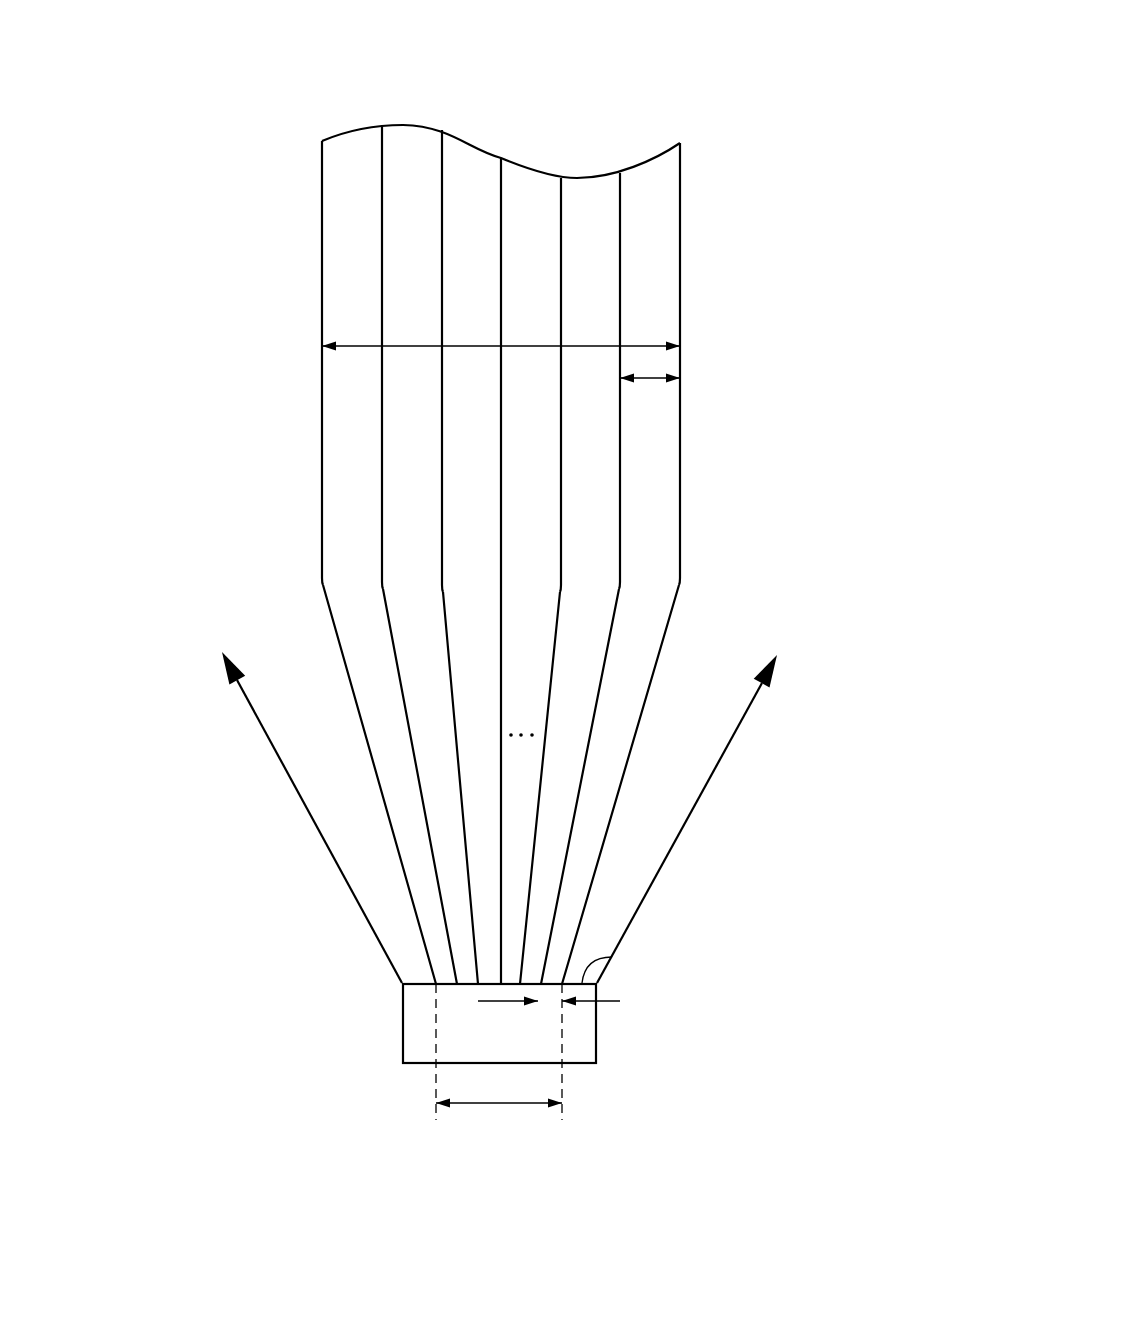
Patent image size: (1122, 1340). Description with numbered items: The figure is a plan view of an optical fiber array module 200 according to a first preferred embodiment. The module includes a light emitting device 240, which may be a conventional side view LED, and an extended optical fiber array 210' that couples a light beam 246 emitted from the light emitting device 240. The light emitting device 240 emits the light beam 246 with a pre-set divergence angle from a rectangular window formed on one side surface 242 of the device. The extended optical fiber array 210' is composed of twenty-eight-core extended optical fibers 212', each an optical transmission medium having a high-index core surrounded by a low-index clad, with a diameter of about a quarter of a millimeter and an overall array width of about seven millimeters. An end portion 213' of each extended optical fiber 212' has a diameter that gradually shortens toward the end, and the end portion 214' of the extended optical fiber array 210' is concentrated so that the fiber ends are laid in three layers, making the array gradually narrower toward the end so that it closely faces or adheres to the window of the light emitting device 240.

The optical fiber array module 200 is at (522, 33).
The extended optical fiber array 210' is at (586, 536).
The extended optical fibers 212' is at (687, 367).
The end portion of each extended optical fiber 213' is at (653, 784).
The end portion of the extended optical fiber array 214' is at (568, 755).
The light emitting device 240 is at (403, 1022).
The side surface 242 is at (612, 957).
The light beam 246 is at (697, 802).